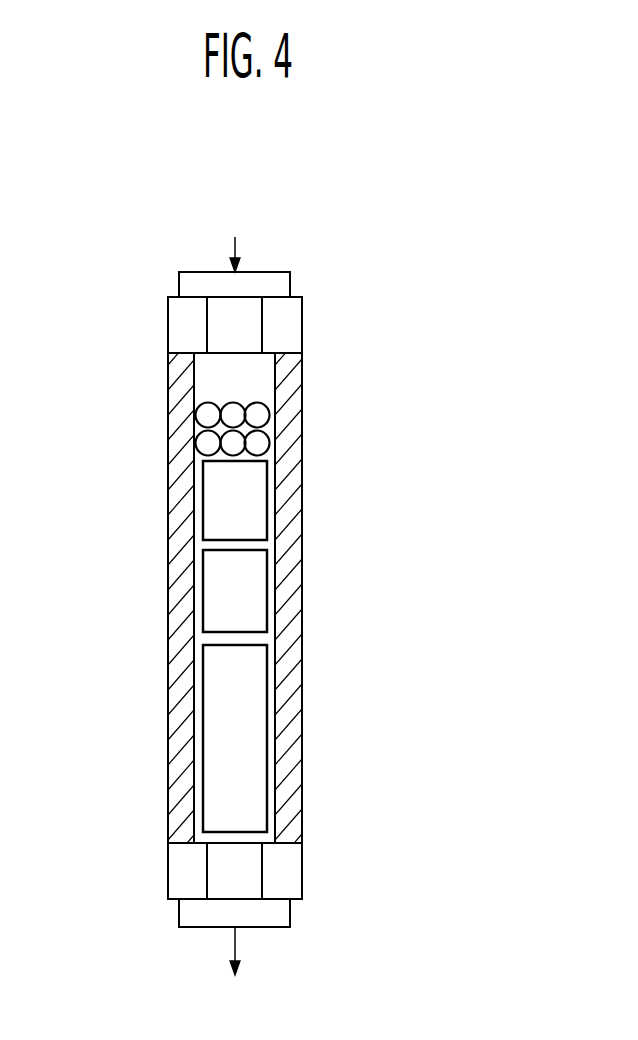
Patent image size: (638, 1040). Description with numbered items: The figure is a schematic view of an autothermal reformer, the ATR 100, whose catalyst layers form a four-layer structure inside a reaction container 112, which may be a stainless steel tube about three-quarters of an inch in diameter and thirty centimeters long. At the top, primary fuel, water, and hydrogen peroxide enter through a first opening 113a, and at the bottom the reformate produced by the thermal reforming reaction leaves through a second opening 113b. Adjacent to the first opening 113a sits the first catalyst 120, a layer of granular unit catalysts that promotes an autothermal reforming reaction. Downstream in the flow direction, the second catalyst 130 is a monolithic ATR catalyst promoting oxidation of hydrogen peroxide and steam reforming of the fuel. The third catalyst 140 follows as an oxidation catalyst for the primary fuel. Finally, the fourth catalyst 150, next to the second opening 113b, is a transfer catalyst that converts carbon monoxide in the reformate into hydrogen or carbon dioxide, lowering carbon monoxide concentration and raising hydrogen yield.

The ATR 100 is at (98, 185).
The reaction container 112 is at (285, 375).
The first opening 113a is at (237, 271).
The second opening 113b is at (236, 928).
The first catalyst 120 is at (255, 418).
The second catalyst 130 is at (255, 491).
The third catalyst 140 is at (250, 580).
The fourth catalyst 150 is at (250, 673).